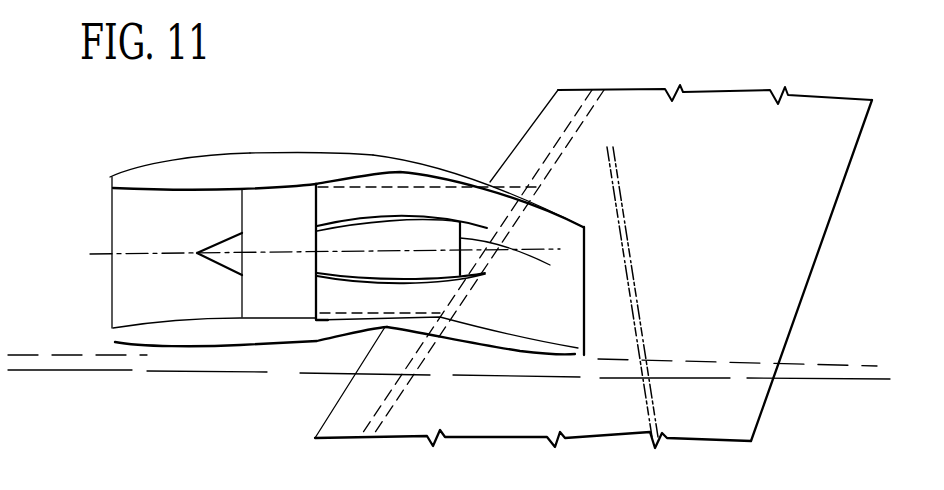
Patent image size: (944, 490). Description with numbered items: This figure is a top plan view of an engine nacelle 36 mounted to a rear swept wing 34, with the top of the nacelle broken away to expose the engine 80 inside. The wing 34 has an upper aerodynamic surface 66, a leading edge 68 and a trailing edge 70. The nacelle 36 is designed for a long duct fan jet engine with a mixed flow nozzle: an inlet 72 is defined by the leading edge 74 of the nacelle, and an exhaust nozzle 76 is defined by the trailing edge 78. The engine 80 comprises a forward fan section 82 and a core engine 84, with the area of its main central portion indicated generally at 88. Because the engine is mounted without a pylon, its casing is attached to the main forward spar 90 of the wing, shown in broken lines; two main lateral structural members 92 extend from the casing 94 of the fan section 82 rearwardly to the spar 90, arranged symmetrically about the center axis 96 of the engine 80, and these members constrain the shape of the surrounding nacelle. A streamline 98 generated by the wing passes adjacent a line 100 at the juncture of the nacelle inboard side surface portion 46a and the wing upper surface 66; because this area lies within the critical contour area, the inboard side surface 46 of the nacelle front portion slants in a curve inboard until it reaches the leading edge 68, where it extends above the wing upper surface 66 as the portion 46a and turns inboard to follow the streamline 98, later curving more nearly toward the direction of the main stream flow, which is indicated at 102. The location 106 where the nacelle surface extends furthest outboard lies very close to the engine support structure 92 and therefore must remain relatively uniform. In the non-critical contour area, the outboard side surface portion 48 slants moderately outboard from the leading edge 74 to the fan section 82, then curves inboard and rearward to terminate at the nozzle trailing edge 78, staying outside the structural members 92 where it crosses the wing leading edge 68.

The wing 34 is at (737, 101).
The nacelle 36 is at (184, 140).
The inboard side surface 46 is at (258, 347).
The nacelle inboard side surface portion 46a is at (473, 352).
The outboard side surface portion 48 is at (376, 155).
The upper aerodynamic surface 66 is at (746, 191).
The leading edge 68 is at (541, 113).
The trailing edge 70 is at (852, 158).
The inlet 72 is at (137, 222).
The leading edge 74 is at (110, 177).
The exhaust nozzle 76 is at (575, 291).
The trailing edge 78 is at (590, 232).
The engine 80 is at (309, 164).
The forward fan section 82 is at (257, 197).
The core engine 84 is at (393, 233).
The main central portion of the engine 88 is at (299, 138).
The main forward spar 90 is at (575, 135).
The main lateral structural members 92 is at (408, 180).
The casing 94 is at (253, 303).
The center axis 96 is at (157, 258).
The streamline 98 is at (62, 355).
The line 100 is at (503, 355).
The direction of the main stream flow 102 is at (713, 378).
The location 106 is at (387, 328).